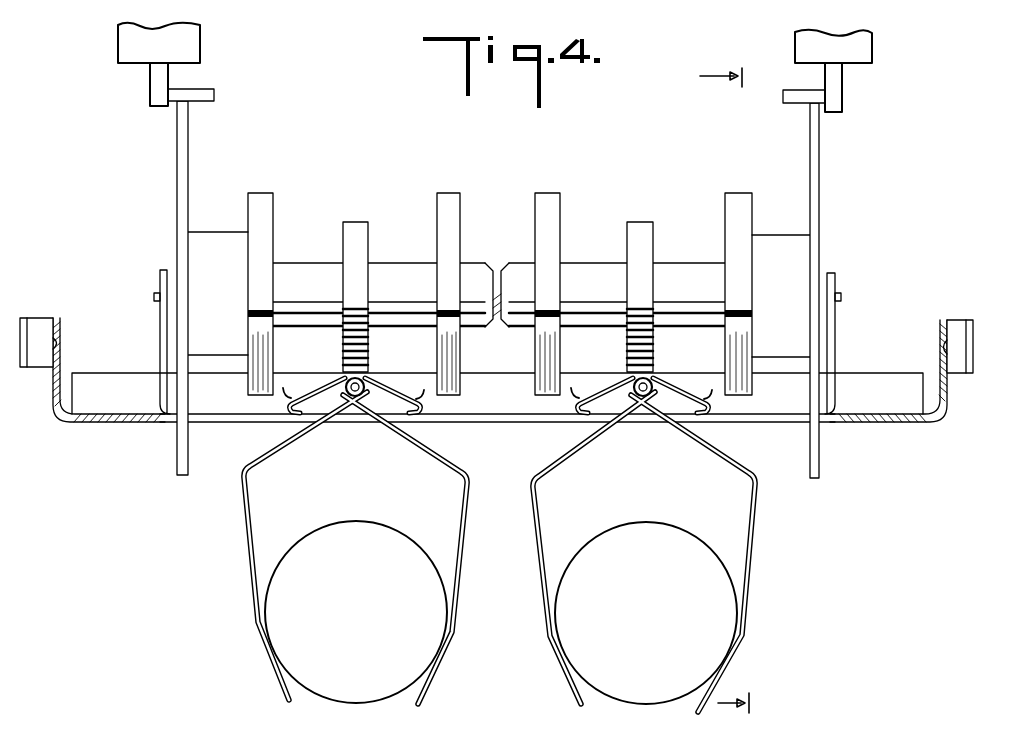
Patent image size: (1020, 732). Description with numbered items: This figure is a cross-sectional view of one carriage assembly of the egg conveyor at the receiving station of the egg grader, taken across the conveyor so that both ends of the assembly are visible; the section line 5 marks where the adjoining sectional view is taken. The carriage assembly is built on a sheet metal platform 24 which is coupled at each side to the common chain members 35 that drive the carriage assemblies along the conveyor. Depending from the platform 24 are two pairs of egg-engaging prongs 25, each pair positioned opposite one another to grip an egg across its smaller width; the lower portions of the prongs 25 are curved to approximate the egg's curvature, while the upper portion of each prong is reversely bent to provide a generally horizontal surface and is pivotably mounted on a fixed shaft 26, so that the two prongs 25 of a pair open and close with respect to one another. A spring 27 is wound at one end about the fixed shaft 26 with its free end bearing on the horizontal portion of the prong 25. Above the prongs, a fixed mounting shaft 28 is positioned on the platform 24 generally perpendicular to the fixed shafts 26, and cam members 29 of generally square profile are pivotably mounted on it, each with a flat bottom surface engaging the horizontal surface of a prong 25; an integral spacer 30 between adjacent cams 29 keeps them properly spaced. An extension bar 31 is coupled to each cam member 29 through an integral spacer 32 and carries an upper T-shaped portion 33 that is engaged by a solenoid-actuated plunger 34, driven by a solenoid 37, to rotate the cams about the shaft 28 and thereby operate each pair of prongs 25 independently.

The section line 5- 5 is at (737, 390).
The sheet metal platform 24 is at (215, 426).
The egg-engaging prongs 25 is at (244, 532).
The fixed shaft 26 is at (340, 377).
The spring 27 is at (312, 410).
The fixed mounting shaft 28 is at (153, 298).
The cam members 29 is at (270, 197).
The integral spacer 30 is at (348, 222).
The extension bar 31 is at (188, 151).
The integral spacer 32 is at (210, 240).
The T-shaped portion 33 is at (215, 99).
The solenoid-actuated plunger 34 is at (157, 98).
The chain members 35 is at (43, 318).
The solenoids 37 is at (205, 61).